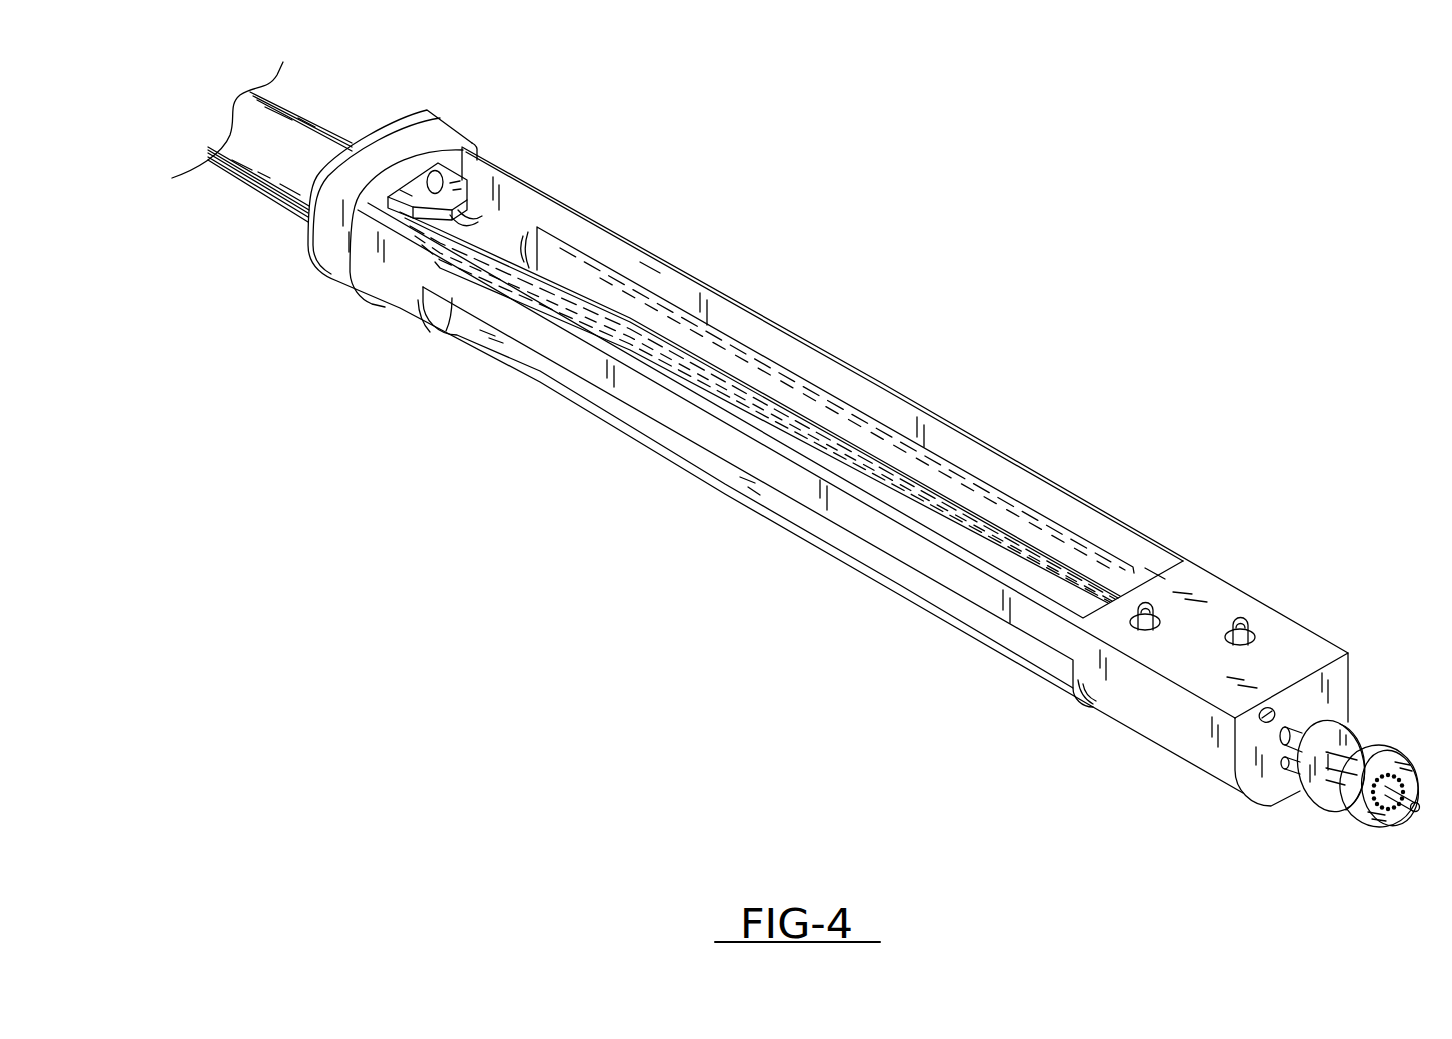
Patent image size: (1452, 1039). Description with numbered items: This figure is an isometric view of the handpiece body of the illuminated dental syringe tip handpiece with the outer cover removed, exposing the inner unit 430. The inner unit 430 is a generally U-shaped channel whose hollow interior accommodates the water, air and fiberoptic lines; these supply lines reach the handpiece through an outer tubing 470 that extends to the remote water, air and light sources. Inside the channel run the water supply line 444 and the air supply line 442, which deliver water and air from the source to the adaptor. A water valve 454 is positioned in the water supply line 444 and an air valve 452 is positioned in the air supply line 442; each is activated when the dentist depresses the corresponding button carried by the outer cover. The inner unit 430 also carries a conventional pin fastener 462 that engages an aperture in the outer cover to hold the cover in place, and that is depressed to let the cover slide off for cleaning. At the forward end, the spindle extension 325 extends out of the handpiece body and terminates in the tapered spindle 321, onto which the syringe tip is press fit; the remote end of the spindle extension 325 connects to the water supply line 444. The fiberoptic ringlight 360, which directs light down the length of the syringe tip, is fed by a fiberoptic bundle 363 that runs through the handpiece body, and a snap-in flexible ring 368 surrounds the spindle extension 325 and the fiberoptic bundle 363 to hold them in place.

The outer tubing 470 is at (292, 143).
The pin fastener 462 is at (452, 198).
The inner unit 430 is at (407, 283).
The air supply line 442 is at (942, 530).
The water supply line 444 is at (1013, 513).
The air valve 452 is at (1133, 620).
The water valve 454 is at (1247, 623).
The spindle extension 325 is at (1293, 733).
The fiberoptic bundle 363 is at (1297, 750).
The flexible ring 368 is at (1340, 733).
The fiberoptic ringlight 360 is at (1373, 760).
The tapered spindle 321 is at (1362, 810).